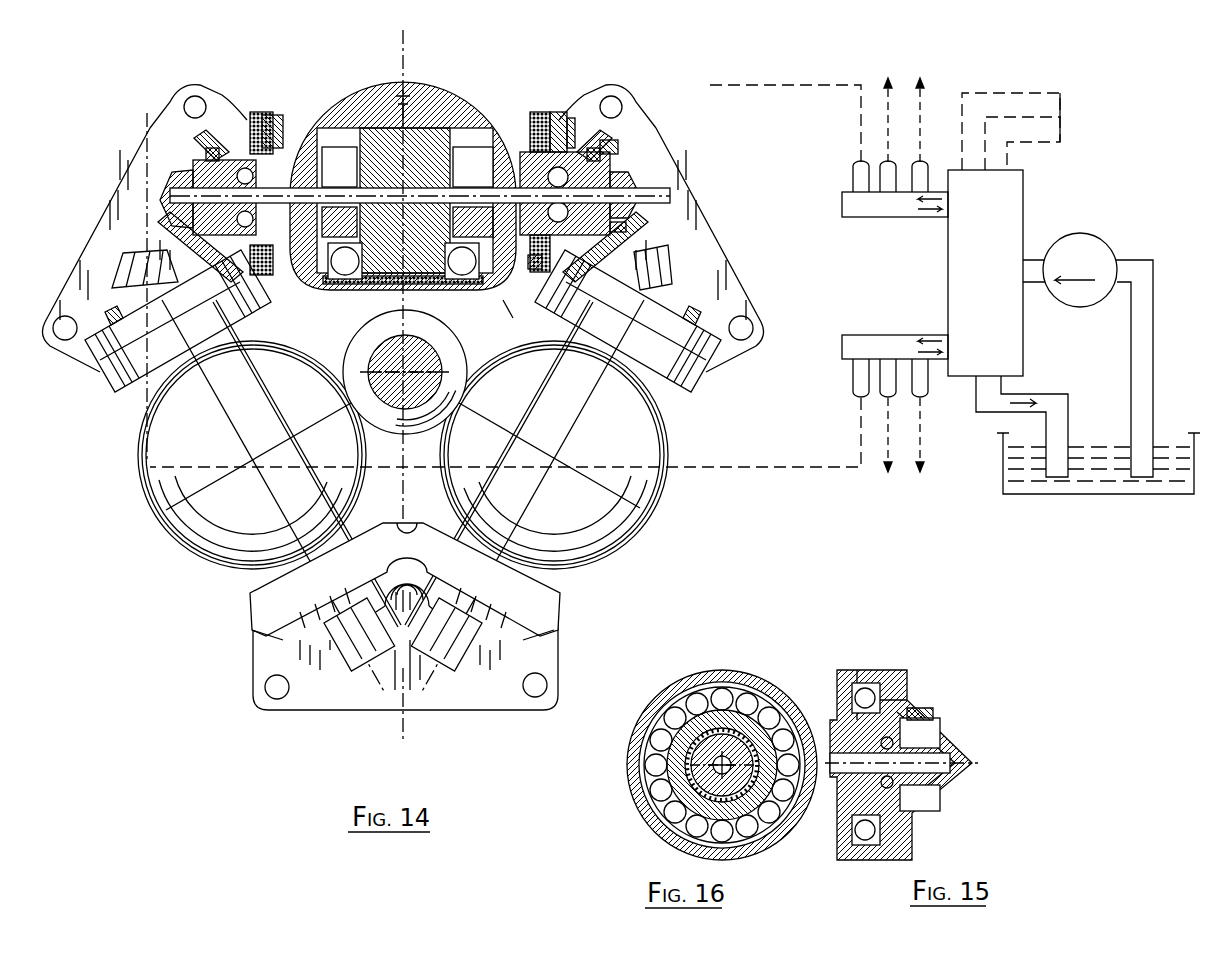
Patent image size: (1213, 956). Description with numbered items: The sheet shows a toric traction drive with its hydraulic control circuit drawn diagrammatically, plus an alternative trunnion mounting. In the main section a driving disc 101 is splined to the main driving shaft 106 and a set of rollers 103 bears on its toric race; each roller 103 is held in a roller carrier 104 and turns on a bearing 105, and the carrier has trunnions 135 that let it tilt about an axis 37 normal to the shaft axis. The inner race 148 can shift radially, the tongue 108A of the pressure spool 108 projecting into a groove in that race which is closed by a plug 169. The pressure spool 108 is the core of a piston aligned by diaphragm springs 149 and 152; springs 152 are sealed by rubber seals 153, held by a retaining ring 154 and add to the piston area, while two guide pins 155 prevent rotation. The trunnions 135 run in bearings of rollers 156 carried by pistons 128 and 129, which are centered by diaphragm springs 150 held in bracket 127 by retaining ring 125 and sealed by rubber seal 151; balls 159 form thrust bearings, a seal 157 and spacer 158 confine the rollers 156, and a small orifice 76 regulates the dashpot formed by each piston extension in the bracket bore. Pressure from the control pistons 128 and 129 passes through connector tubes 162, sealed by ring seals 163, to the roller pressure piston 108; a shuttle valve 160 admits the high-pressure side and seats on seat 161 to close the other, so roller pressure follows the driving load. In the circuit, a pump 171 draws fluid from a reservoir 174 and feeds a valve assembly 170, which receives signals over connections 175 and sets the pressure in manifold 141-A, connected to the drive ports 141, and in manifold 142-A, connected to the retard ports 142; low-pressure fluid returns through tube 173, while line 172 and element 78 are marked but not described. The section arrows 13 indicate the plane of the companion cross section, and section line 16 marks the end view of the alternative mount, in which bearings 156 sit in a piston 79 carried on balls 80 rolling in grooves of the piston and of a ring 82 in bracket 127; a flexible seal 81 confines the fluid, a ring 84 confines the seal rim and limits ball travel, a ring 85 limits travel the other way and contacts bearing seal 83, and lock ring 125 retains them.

In FIG. 14, the section line 13- 13 is at (380, 48).
In FIG. 15, the section line 16— 16 is at (853, 659).
In FIG. 14, the axis 37 is at (640, 196).
In FIG. 16, the axis 37 is at (740, 788).
In FIG. 15, the axis 37 is at (960, 763).
In FIG. 14, the small orifice 76 is at (640, 180).
In FIG. 15, the small orifice 76 is at (950, 755).
In FIG. 14, the crank bore 78 is at (493, 363).
In FIG. 16, the piston 79 is at (645, 718).
In FIG. 15, the piston 79 is at (965, 771).
In FIG. 16, the balls 80 is at (702, 696).
In FIG. 15, the balls 80 is at (885, 830).
In FIG. 15, the flexible seal 81 is at (905, 705).
In FIG. 16, the ring 82 is at (693, 672).
In FIG. 15, the ring 82 is at (880, 672).
In FIG. 15, the bearing seal 83 is at (845, 815).
In FIG. 15, the ring 84 is at (890, 680).
In FIG. 15, the ring 85 is at (855, 862).
In FIG. 14, the disc 101 is at (452, 353).
In FIG. 14, the roller 103 is at (445, 488).
In FIG. 14, the roller carrier 104 is at (352, 90).
In FIG. 15, the roller carrier 104 is at (830, 740).
In FIG. 14, the bearing 105 is at (313, 335).
In FIG. 14, the main driving shaft 106 is at (348, 437).
In FIG. 14, the pressure spool 108 is at (345, 292).
In FIG. 14, the tongue 108A is at (461, 410).
In FIG. 14, the retaining ring 125 is at (538, 111).
In FIG. 15, the retaining ring 125 is at (840, 852).
In FIG. 14, the bracket 127 is at (100, 220).
In FIG. 16, the bracket 127 is at (680, 690).
In FIG. 15, the bracket 127 is at (847, 672).
In FIG. 14, the piston 128 is at (627, 97).
In FIG. 14, the piston 129 is at (200, 125).
In FIG. 14, the trunnions 135 is at (503, 300).
In FIG. 16, the trunnions 135 is at (685, 773).
In FIG. 15, the trunnions 135 is at (833, 715).
In FIG. 14, the drive ports 141 is at (112, 310).
In FIG. 15, the drive ports 141 is at (920, 718).
In FIG. 14, the manifold 141-A is at (900, 217).
In FIG. 14, the retard ports 142 is at (205, 150).
In FIG. 14, the manifold 142-A is at (896, 335).
In FIG. 14, the inner race 148 is at (462, 290).
In FIG. 14, the diaphragm springs 149 is at (300, 150).
In FIG. 14, the diaphragm springs 150 is at (530, 150).
In FIG. 14, the rubber seal 151 is at (552, 112).
In FIG. 14, the diaphragm springs 152 is at (262, 111).
In FIG. 14, the rubber seals 153 is at (330, 250).
In FIG. 14, the retaining ring 154 is at (252, 292).
In FIG. 14, the guide pins 155 is at (392, 127).
In FIG. 14, the rollers 156 is at (572, 117).
In FIG. 16, the rollers 156 is at (668, 752).
In FIG. 15, the rollers 156 is at (930, 812).
In FIG. 14, the seal 157 is at (537, 267).
In FIG. 14, the spacer 158 is at (605, 140).
In FIG. 15, the spacer 158 is at (938, 740).
In FIG. 14, the balls 159 is at (637, 223).
In FIG. 15, the balls 159 is at (940, 806).
In FIG. 14, the shuttle valve 160 is at (412, 118).
In FIG. 14, the seat 161 is at (440, 126).
In FIG. 14, the connector tubes 162 is at (627, 170).
In FIG. 16, the connector tubes 162 is at (660, 807).
In FIG. 15, the connector tubes 162 is at (950, 745).
In FIG. 14, the ring seals 163 is at (615, 165).
In FIG. 15, the ring seals 163 is at (935, 790).
In FIG. 14, the plug 169 is at (360, 340).
In FIG. 14, the valve assembly 170 is at (1023, 183).
In FIG. 14, the pump 171 is at (1090, 236).
In FIG. 14, the suction line 172 is at (1153, 280).
In FIG. 14, the tube 173 is at (1028, 394).
In FIG. 14, the reservoir 174 is at (1140, 494).
In FIG. 14, the connections 175 is at (1060, 117).